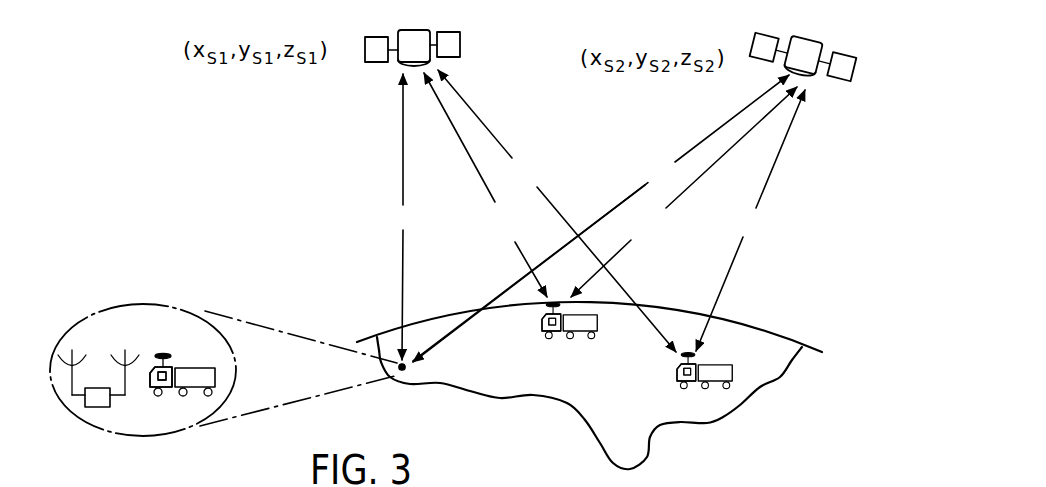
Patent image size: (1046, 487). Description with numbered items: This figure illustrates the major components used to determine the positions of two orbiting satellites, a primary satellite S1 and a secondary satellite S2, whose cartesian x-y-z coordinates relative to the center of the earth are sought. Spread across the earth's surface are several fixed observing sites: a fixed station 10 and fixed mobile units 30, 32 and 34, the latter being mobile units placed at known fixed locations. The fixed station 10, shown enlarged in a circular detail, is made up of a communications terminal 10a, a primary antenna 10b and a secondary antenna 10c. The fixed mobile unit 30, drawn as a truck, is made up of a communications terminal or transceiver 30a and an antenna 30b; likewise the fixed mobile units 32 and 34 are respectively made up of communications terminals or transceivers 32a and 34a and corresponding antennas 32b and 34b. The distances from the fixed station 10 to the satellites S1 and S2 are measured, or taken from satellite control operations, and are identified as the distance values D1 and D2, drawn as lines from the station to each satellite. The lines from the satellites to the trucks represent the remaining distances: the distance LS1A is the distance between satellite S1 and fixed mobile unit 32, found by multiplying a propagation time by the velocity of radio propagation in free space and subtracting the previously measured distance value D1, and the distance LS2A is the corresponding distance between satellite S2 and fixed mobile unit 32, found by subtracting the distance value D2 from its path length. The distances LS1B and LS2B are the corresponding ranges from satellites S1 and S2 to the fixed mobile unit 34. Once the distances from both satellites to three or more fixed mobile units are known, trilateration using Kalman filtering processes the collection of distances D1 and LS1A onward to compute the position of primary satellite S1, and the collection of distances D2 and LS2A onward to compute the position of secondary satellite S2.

The fixed station 10 is at (226, 376).
The communications terminal 10a is at (86, 407).
The primary antenna 10b is at (71, 351).
The secondary antenna 10c is at (126, 351).
The fixed mobile unit 30 is at (307, 394).
The communications terminal or transceiver 30a is at (171, 414).
The antenna 30b is at (182, 347).
The fixed mobile unit 32 is at (542, 351).
The communications terminal or transceiver 32a is at (541, 347).
The antenna 32b is at (518, 327).
The fixed mobile unit 34 is at (684, 398).
The communications terminal or transceiver 34a is at (666, 388).
The antenna 34b is at (655, 358).
The primary satellite S1 is at (403, 30).
The secondary satellite S2 is at (808, 45).
The distance value D1 is at (408, 217).
The distance value D2 is at (601, 218).
The distance LS1A is at (485, 185).
The distance LS1B is at (557, 211).
The distance LS2A is at (684, 192).
The distance LS2B is at (750, 220).